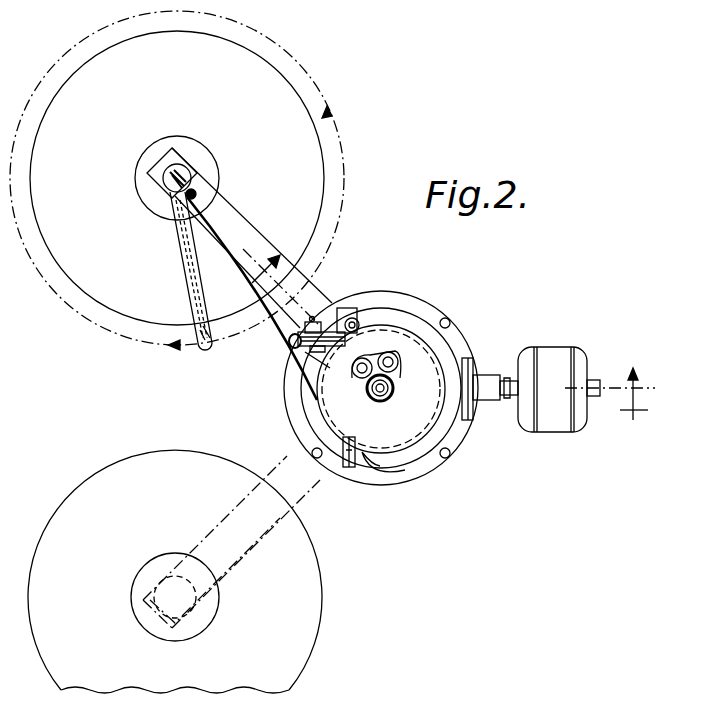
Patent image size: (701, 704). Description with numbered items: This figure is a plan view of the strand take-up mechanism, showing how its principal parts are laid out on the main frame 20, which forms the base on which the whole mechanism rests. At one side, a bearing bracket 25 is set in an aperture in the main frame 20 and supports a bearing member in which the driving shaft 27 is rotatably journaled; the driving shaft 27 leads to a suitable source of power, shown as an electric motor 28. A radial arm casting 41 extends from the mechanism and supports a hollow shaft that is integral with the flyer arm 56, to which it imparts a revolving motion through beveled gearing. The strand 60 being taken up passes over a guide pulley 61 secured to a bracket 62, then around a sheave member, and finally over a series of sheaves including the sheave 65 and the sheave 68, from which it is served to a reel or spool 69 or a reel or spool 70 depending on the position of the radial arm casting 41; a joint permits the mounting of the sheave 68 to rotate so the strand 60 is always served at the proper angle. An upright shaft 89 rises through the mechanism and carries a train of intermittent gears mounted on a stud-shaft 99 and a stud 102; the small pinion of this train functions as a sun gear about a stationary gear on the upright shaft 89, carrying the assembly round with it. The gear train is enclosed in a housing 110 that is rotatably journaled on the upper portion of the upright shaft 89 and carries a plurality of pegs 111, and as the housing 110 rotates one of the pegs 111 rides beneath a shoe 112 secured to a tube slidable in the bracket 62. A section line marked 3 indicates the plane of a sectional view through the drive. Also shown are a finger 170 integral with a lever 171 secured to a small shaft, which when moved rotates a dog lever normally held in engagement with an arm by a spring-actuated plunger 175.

The section line 3- 3 is at (438, 338).
The main frame 20 is at (428, 340).
The bearing bracket 25 is at (482, 386).
The driving shaft 27 is at (496, 402).
The electric motor 28 is at (550, 358).
The radial arm casting 41 is at (318, 290).
The flyer arm 56 is at (168, 240).
The strand 60 is at (180, 262).
The guide pulley 61 is at (293, 355).
The bracket 62 is at (318, 330).
The sheave 65 is at (196, 194).
The sheave 68 is at (205, 350).
The reel or spool 69 is at (290, 110).
The reel or spool 70 is at (312, 600).
The upright shaft 89 is at (378, 402).
The stud-shaft 99 is at (357, 376).
The stud 102 is at (400, 366).
The housing 110 is at (387, 340).
The pegs 111 is at (458, 356).
The shoe 112 is at (356, 318).
The finger 170 is at (378, 472).
The lever 171 is at (350, 470).
The plunger 175 is at (403, 6).